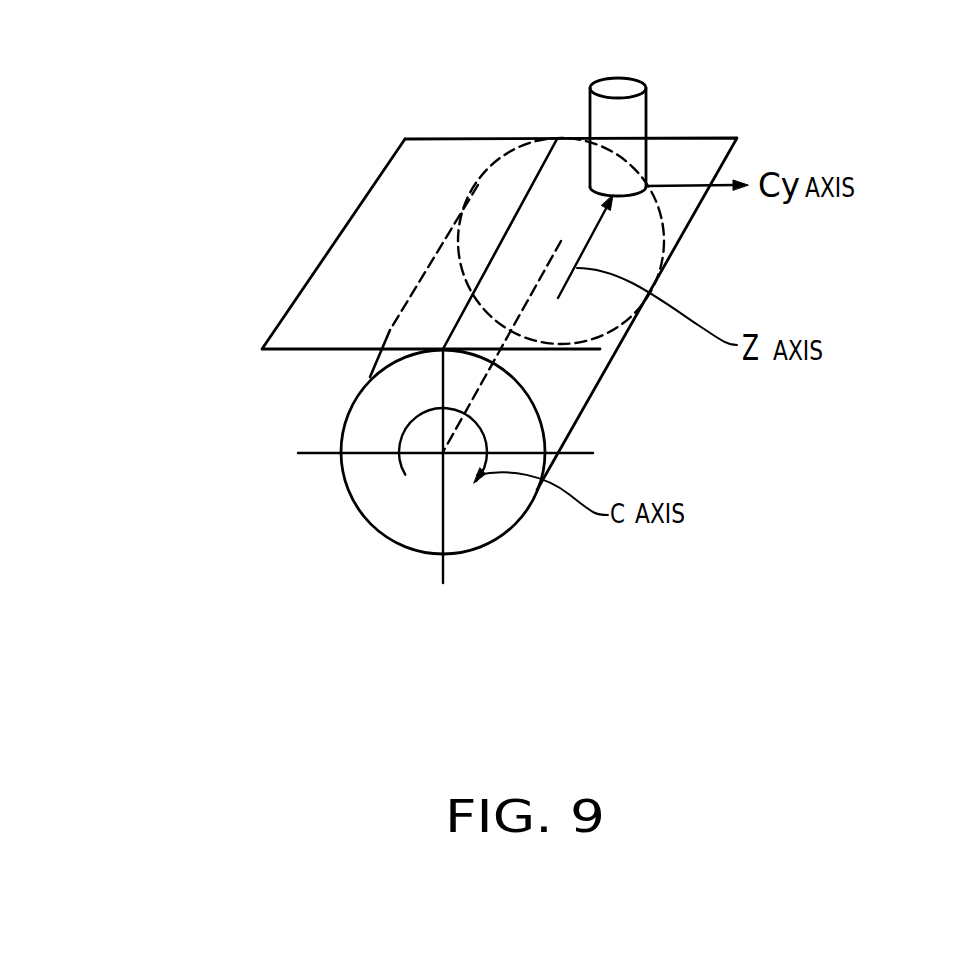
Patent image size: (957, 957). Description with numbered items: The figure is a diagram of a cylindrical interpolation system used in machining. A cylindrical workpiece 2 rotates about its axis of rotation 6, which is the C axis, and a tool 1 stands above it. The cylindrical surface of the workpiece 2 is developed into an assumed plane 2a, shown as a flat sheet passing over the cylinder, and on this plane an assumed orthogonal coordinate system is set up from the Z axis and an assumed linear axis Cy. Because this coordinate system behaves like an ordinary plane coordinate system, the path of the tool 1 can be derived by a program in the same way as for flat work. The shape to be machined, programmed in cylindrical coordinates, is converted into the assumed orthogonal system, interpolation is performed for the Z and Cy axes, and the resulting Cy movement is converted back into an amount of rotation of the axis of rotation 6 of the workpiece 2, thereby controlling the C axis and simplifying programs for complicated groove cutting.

The tool 1 is at (643, 86).
The workpiece 2 is at (515, 527).
The assumed plane 2a is at (293, 301).
The axis of rotation (C axis) 6 is at (477, 392).